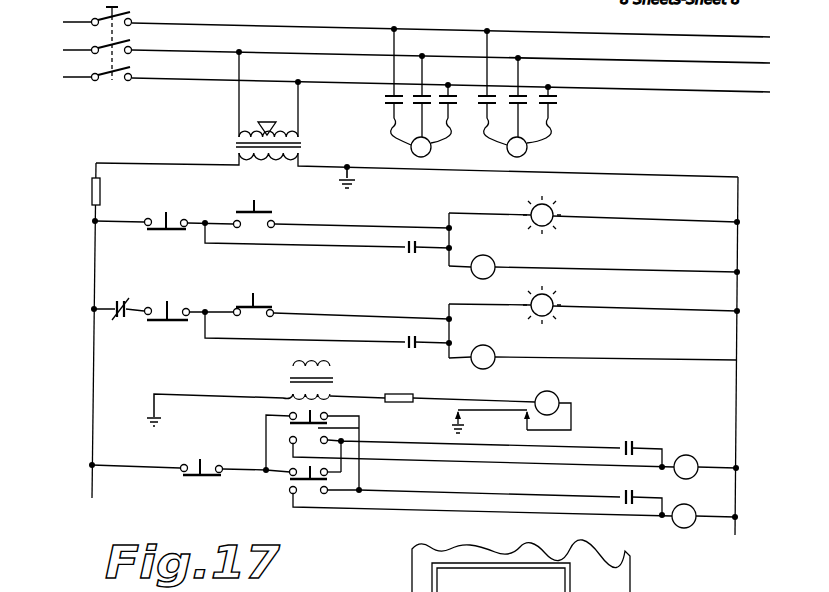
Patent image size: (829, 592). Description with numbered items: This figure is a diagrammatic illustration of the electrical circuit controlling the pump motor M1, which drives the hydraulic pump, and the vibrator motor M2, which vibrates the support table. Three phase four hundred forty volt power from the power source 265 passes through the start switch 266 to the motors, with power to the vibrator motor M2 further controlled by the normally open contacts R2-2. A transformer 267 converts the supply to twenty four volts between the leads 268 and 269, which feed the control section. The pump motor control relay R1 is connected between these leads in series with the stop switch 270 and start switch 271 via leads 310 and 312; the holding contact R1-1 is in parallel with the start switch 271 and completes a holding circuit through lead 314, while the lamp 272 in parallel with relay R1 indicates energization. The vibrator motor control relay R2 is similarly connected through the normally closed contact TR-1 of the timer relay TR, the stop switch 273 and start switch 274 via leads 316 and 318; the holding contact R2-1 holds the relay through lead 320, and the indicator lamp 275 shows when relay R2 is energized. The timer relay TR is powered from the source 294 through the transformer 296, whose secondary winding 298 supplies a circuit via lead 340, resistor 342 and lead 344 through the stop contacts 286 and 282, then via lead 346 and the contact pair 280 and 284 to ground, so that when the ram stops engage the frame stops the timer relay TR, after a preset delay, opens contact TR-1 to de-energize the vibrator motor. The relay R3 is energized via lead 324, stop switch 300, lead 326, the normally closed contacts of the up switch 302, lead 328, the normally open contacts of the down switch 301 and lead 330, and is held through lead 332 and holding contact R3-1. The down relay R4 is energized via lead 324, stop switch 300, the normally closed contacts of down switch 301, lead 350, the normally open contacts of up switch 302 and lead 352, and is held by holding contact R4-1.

The power source 265 is at (51, 54).
The start switch 266 is at (139, 13).
The transformer 267 is at (233, 147).
The lead 268 is at (94, 271).
The lead 269 is at (739, 292).
The stop switch 270 is at (178, 214).
The start switch 271 is at (273, 212).
The lamp 272 is at (556, 212).
The stop switch 273 is at (178, 304).
The start switch 274 is at (258, 300).
The indicator lamp 275 is at (556, 303).
The sizing contact 280 is at (471, 411).
The sizing contact 282 is at (530, 400).
The contact 284 is at (452, 426).
The contact 286 is at (526, 417).
The power source 294 is at (240, 386).
The transformer 296 is at (288, 379).
The secondary winding 298 is at (290, 396).
The stop switch 300 is at (202, 479).
The down switch 301 is at (311, 500).
The up switch 302 is at (358, 433).
The lead 310 is at (365, 226).
The lead 312 is at (540, 269).
The lead 314 is at (362, 250).
The lead 316 is at (365, 317).
The lead 318 is at (555, 358).
The lead 320 is at (305, 328).
The lead 324 is at (140, 471).
The lead 326 is at (263, 457).
The lead 328 is at (362, 476).
The lead 330 is at (399, 509).
The lead 332 is at (478, 492).
The lead 340 is at (366, 388).
The resistor 342 is at (410, 387).
The lead 344 is at (492, 400).
The lead 346 is at (466, 414).
The lead 350 is at (362, 450).
The lead 352 is at (565, 468).
The pump motor M1 is at (421, 95).
The vibrator motor M2 is at (517, 97).
The pump motor control relay R1 is at (482, 264).
The vibrator motor control relay R2 is at (482, 354).
The relay R3 is at (703, 515).
The down relay R4 is at (705, 466).
The timer relay TR is at (554, 407).
The normally closed contact TR-1 is at (119, 321).
The holding contact R1-1 is at (423, 260).
The holding contact R2-1 is at (402, 118).
The normally open contacts R2-2 is at (531, 115).
The holding contact R3-1 is at (640, 496).
The holding contact R4-1 is at (640, 448).